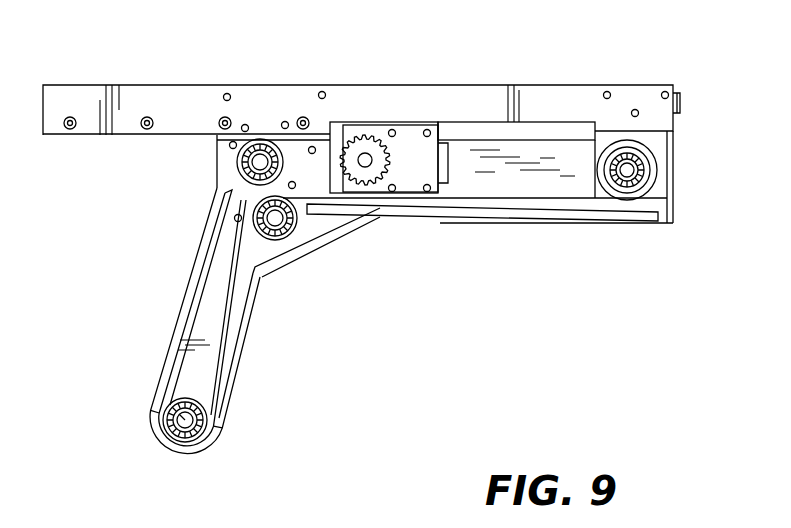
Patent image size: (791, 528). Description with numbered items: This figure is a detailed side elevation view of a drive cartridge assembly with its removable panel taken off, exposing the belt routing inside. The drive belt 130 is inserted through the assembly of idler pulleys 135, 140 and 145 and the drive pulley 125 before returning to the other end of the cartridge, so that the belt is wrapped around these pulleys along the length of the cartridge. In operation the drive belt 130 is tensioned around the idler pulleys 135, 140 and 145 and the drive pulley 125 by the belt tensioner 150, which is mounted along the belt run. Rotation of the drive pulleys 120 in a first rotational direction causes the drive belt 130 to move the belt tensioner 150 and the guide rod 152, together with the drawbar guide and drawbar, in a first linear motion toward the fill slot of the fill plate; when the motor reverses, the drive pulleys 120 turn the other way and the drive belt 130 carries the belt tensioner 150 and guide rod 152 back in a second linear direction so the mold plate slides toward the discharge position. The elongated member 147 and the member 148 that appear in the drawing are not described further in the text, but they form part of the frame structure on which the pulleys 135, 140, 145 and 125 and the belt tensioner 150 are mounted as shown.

The support bar 147 is at (444, 96).
The drive belt 130 is at (538, 132).
The guide rod 152 is at (683, 102).
The idler pulley 145 is at (256, 136).
The frame 148 is at (222, 170).
The belt tensioner 150 is at (412, 176).
The idler pulley 135 is at (300, 236).
The idler pulley 140 is at (640, 200).
The drive pulley 120 is at (172, 403).
The drive pulley 125 is at (200, 428).